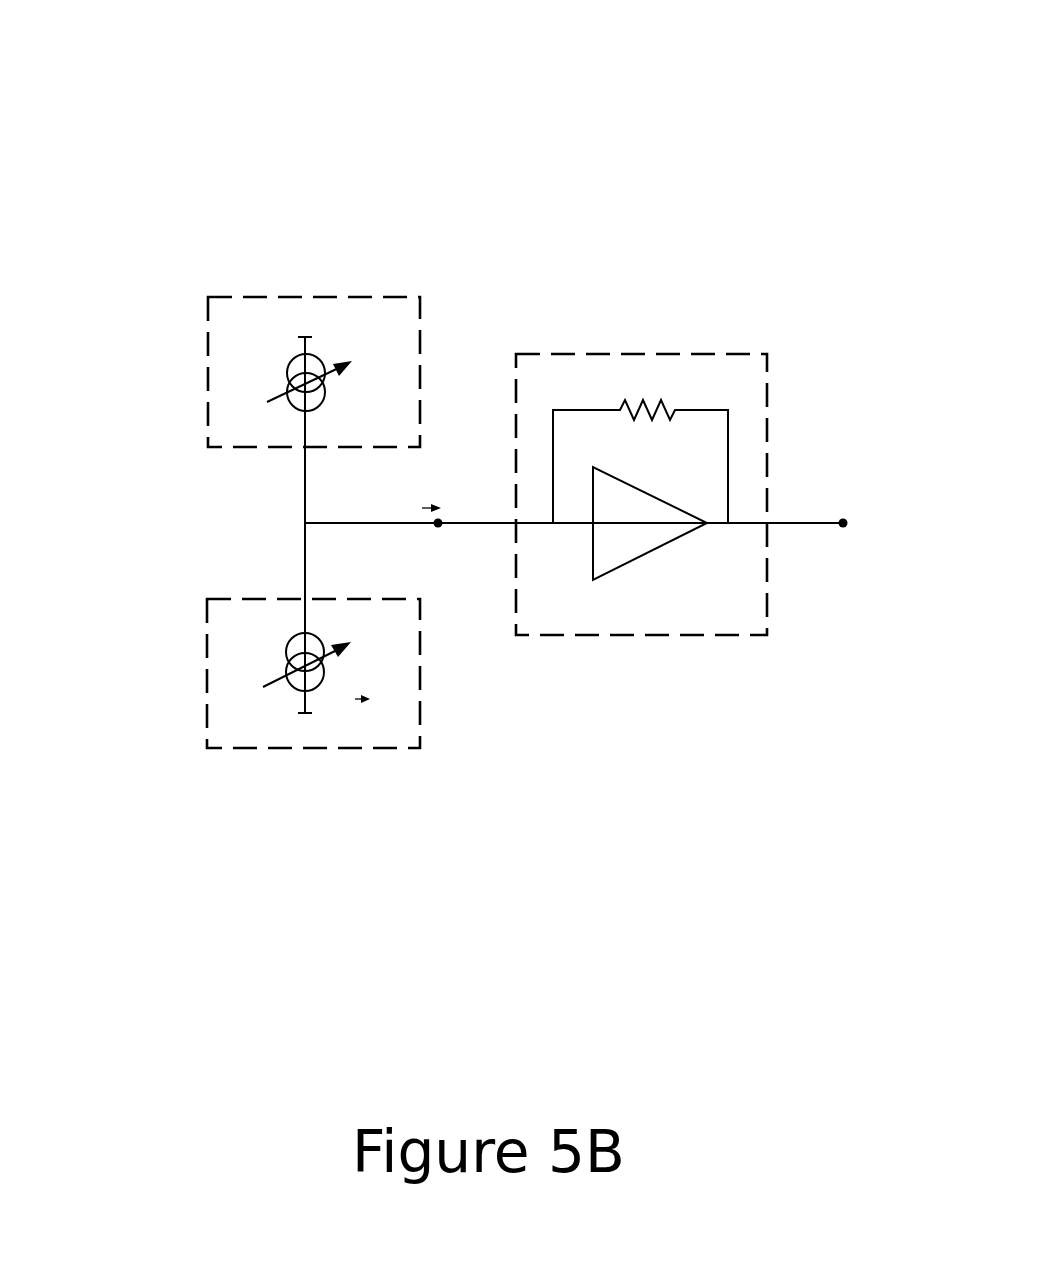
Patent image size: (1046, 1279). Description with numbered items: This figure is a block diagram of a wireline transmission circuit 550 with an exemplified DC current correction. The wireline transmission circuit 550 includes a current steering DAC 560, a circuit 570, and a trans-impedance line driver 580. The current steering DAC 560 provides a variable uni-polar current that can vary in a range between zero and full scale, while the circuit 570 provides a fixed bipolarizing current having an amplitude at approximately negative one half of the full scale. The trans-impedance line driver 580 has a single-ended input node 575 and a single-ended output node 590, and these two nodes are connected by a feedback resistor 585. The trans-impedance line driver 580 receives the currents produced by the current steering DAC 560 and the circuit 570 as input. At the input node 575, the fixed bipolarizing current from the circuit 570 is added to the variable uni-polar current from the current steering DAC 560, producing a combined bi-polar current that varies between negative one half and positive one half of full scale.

The wireline transmission circuit 550 is at (798, 129).
The current steering DAC 560 is at (230, 598).
The circuit 570 is at (253, 298).
The input node 575 is at (443, 545).
The trans-impedance line driver 580 is at (768, 363).
The feedback resistor 585 is at (600, 387).
The output node 590 is at (836, 550).